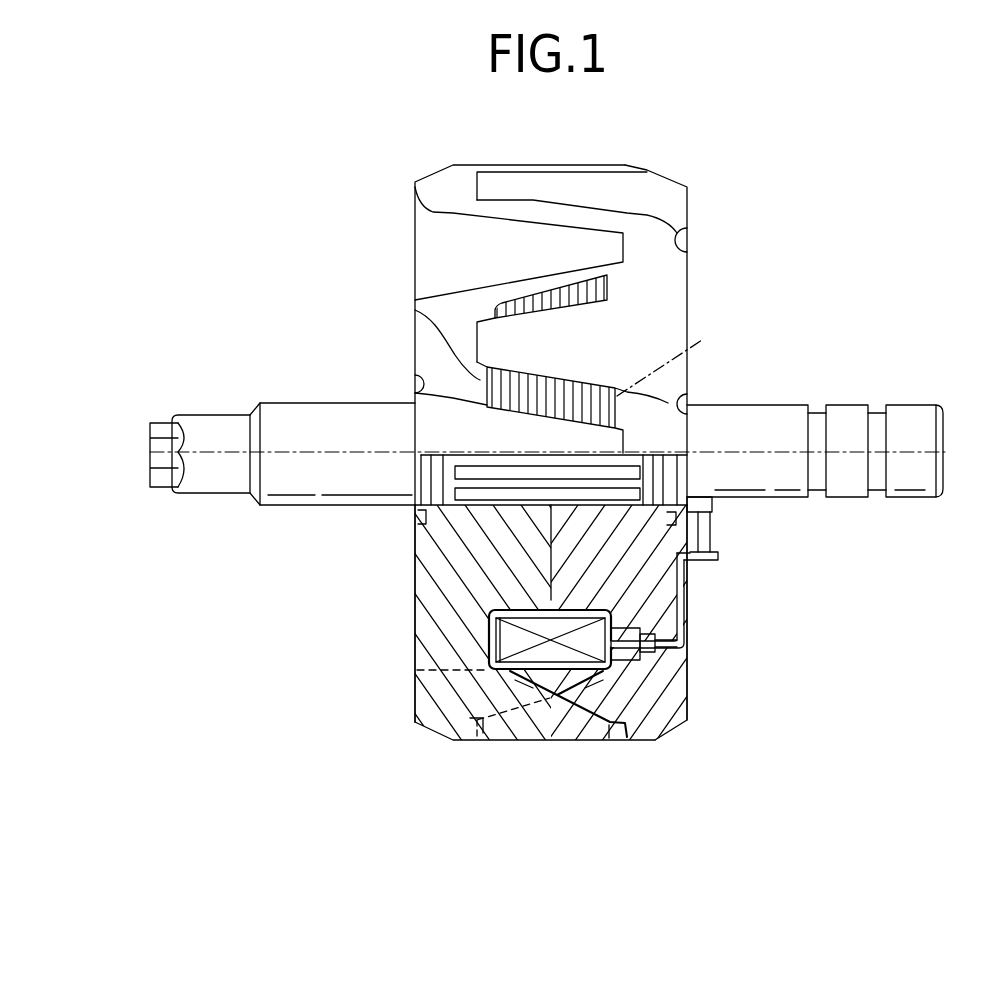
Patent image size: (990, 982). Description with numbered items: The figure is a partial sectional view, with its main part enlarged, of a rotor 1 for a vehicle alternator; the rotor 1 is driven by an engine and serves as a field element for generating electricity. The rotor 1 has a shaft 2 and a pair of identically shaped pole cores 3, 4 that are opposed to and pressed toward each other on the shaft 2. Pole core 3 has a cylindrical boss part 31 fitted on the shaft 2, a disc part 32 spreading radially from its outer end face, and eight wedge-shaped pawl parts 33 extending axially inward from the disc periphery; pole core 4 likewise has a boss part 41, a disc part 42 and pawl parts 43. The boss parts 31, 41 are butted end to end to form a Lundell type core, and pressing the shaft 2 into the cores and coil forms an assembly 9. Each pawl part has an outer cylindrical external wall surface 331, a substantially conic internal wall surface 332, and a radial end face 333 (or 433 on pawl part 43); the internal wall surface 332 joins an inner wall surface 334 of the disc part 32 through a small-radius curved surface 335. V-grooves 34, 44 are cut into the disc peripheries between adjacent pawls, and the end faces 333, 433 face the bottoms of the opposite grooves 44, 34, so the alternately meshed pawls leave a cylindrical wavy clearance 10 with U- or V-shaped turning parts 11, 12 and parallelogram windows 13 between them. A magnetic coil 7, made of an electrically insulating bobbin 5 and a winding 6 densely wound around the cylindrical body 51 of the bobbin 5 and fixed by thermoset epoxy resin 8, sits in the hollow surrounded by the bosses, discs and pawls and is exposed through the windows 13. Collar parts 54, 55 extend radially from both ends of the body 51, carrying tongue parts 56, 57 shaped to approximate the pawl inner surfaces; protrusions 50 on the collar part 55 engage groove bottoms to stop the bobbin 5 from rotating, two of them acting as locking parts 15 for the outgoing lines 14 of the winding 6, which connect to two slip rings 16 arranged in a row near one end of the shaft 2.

The rotor 1 is at (870, 181).
The shaft 2 is at (778, 500).
The pole core 3 is at (421, 176).
The pole core 4 is at (681, 177).
The insulating bobbin 5 is at (490, 620).
The winding 6 is at (490, 612).
The magnetic coil 7 is at (366, 551).
The thermoset resin 8 is at (557, 698).
The assembly 9 is at (793, 750).
The wavy clearance 10 is at (415, 300).
The turning part 11 is at (427, 342).
The turning part 12 is at (632, 393).
The window 13 is at (702, 340).
The outgoing line 14 is at (690, 640).
The locking part 15 is at (665, 695).
The slip ring 16 is at (905, 500).
The boss part 31 is at (517, 545).
The disc part 32 is at (445, 690).
The pawl part 33 is at (610, 727).
The V-groove 34 is at (420, 382).
The boss part 41 is at (715, 512).
The disc part 42 is at (713, 565).
The pawl part 43 is at (497, 735).
The V-groove 44 is at (690, 243).
The protrusion 50 is at (652, 663).
The body 51 is at (700, 560).
The collar part 54 is at (487, 630).
The collar part 55 is at (643, 700).
The tongue part 56 is at (557, 695).
The tongue part 57 is at (660, 737).
The external wall surface 331 is at (525, 740).
The internal wall surface 332 is at (570, 712).
The end face 333 is at (630, 713).
The inner wall surface 334 is at (490, 647).
The curved surface 335 is at (417, 668).
The end face 433 is at (453, 738).